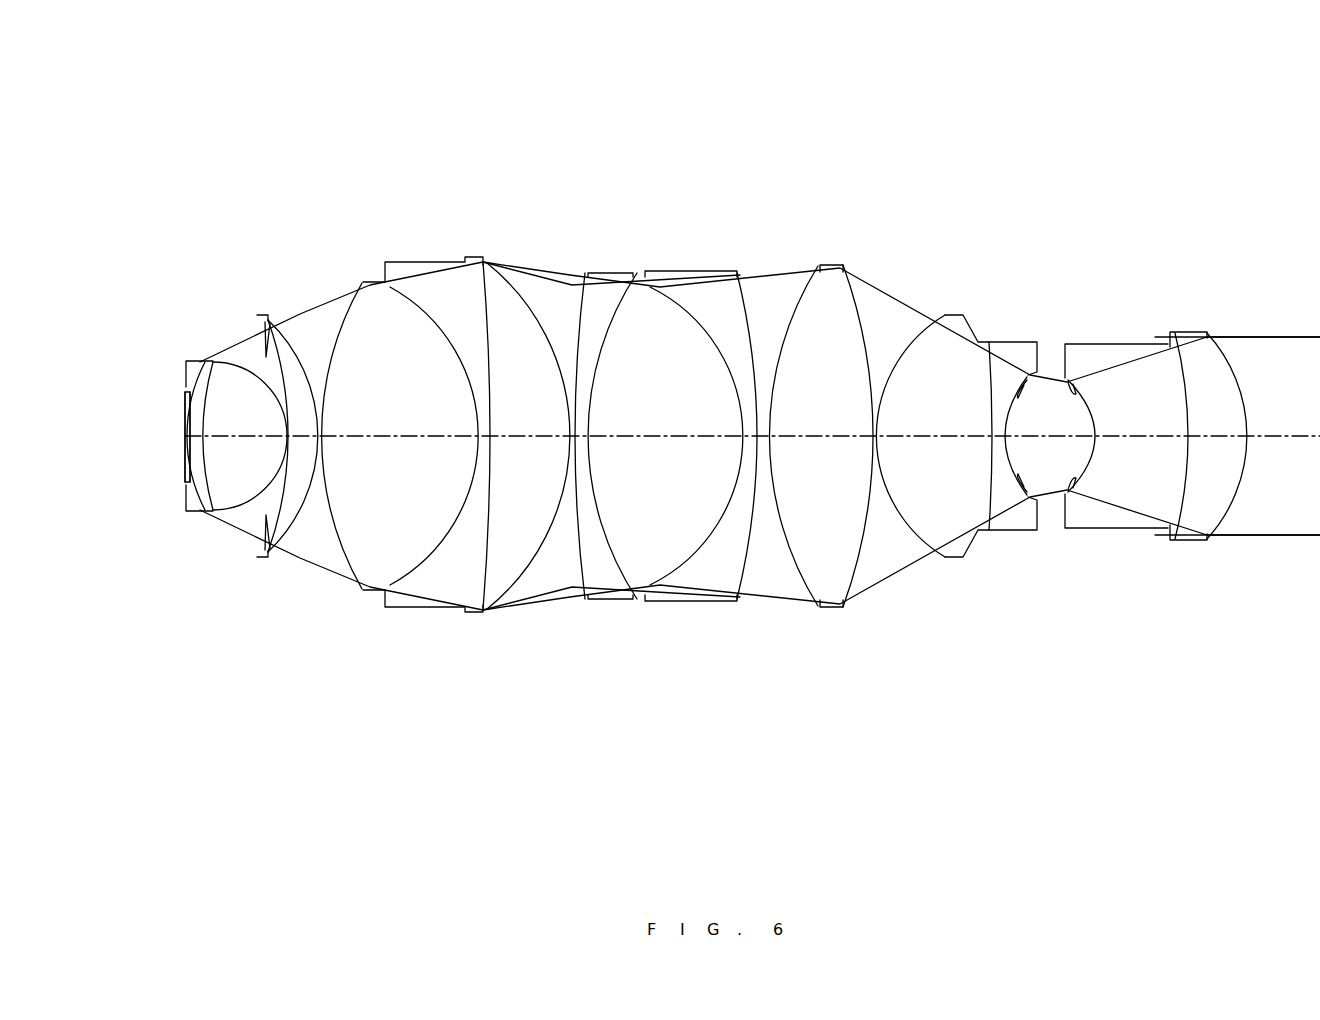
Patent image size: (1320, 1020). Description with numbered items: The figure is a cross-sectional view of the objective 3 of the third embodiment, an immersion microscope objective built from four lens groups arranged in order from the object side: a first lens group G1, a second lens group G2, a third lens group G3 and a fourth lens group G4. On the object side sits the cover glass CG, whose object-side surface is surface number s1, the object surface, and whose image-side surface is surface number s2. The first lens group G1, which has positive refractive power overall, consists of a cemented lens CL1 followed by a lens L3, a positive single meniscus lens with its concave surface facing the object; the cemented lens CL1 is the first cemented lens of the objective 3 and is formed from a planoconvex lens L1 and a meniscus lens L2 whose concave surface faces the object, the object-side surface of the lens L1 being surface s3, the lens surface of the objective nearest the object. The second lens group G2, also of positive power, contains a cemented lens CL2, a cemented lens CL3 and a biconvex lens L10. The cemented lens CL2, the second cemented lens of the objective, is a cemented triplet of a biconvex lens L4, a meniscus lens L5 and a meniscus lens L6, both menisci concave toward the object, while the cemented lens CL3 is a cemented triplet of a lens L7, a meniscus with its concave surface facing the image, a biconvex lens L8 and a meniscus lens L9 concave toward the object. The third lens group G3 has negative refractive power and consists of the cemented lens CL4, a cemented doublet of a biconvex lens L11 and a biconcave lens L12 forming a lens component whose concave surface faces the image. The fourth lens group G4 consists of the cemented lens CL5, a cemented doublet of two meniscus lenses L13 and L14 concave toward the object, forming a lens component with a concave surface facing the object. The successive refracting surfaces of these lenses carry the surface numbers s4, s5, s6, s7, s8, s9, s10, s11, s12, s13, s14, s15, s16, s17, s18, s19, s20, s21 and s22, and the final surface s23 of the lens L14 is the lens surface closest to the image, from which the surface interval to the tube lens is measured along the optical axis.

The objective 3 is at (1201, 39).
The cover glass CG is at (185, 482).
The first lens group G1 is at (310, 742).
The second lens group G2 is at (852, 742).
The third lens group G3 is at (1047, 742).
The fourth lens group G4 is at (1217, 742).
The cemented lens CL1 is at (267, 688).
The cemented lens CL2 is at (517, 688).
The cemented lens CL3 is at (738, 688).
The cemented lens CL4 is at (1035, 688).
The cemented lens CL5 is at (1192, 688).
The lens L1 is at (193, 485).
The lens L2 is at (228, 480).
The lens L3 is at (287, 500).
The lens L4 is at (358, 525).
The lens L5 is at (448, 520).
The lens L6 is at (503, 520).
The lens L7 is at (605, 520).
The lens L8 is at (665, 520).
The lens L9 is at (735, 540).
The lens L10 is at (818, 540).
The lens L11 is at (955, 500).
The lens L12 is at (1003, 500).
The lens L13 is at (1088, 505).
The lens L14 is at (1200, 510).
The object surface s1 is at (178, 412).
The cover glass image-side surface s2 is at (189, 400).
The lens surface closest to the object s3 is at (203, 362).
The surface s4 is at (214, 360).
The surface s5 is at (250, 368).
The surface s6 is at (265, 315).
The surface s7 is at (298, 358).
The surface s8 is at (343, 300).
The surface s9 is at (440, 290).
The surface s10 is at (480, 262).
The surface s11 is at (520, 293).
The surface s12 is at (588, 273).
The surface s13 is at (615, 313).
The surface s14 is at (690, 318).
The surface s15 is at (747, 320).
The surface s16 is at (788, 310).
The surface s17 is at (868, 330).
The surface s18 is at (917, 330).
The surface s19 is at (989, 342).
The surface s20 is at (1028, 375).
The surface s21 is at (1070, 378).
The surface s22 is at (1176, 340).
The lens surface closest to the image s23 is at (1222, 332).